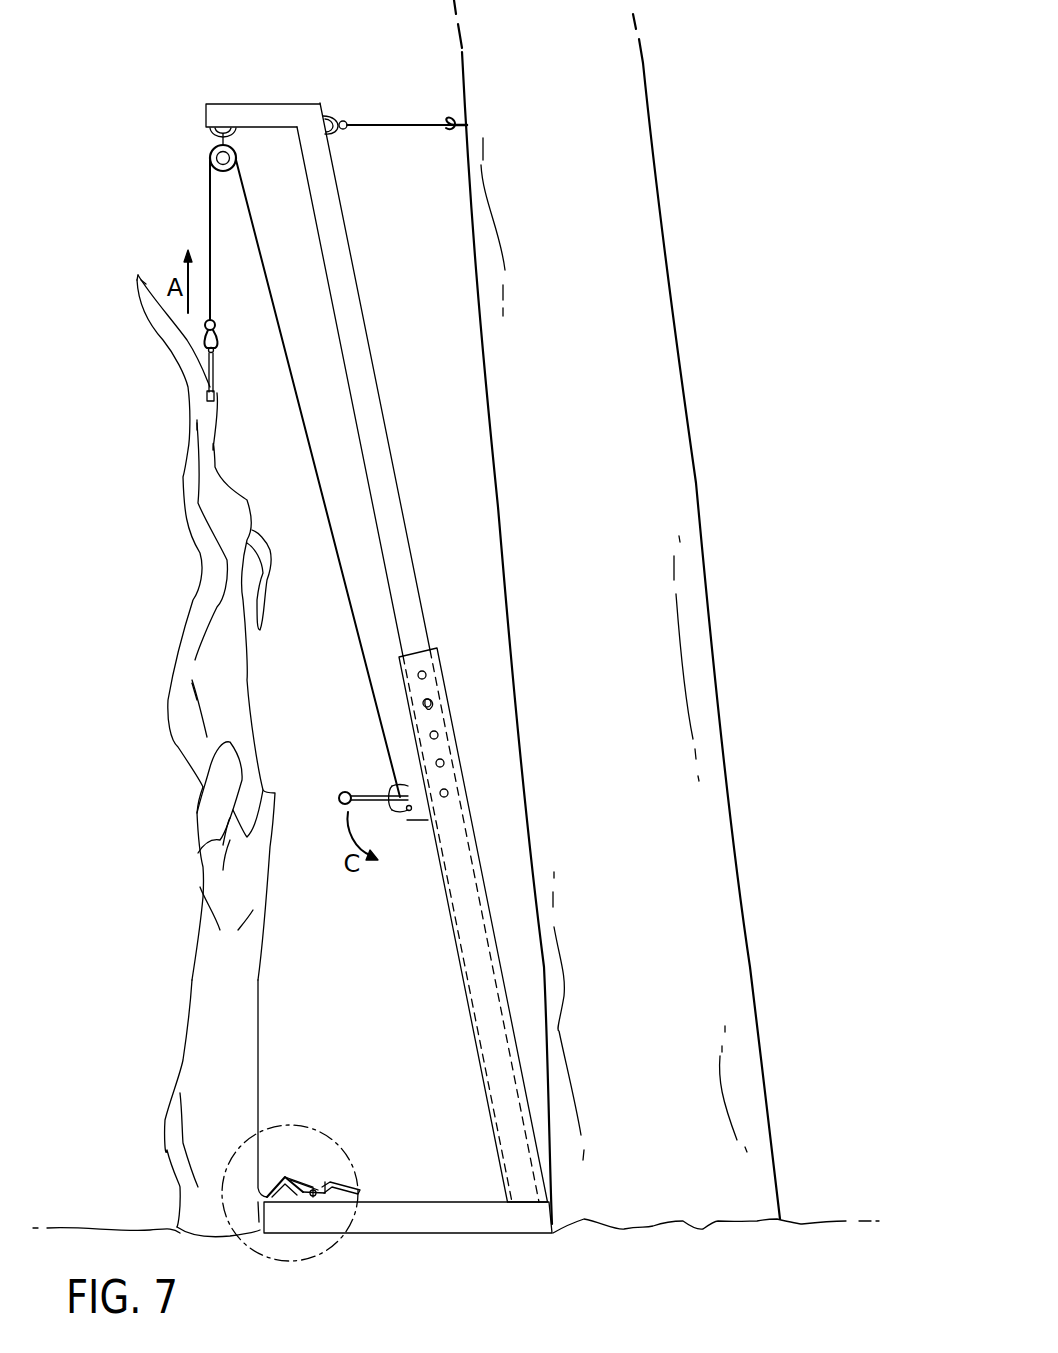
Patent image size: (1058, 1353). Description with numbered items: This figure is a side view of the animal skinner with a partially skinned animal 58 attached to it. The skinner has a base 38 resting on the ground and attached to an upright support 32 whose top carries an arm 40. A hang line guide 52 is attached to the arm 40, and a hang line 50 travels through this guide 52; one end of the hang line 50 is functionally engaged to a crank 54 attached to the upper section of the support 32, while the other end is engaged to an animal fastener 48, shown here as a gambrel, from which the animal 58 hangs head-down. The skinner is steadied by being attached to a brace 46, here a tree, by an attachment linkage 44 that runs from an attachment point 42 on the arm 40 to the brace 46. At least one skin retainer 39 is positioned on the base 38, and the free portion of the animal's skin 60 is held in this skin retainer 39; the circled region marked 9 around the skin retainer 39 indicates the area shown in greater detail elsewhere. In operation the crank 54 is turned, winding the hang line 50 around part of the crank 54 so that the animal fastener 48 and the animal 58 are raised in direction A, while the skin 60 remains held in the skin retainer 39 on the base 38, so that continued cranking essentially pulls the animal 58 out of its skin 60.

The support 32 is at (428, 618).
The base 38 is at (417, 1210).
The skin retainer 39 is at (311, 1183).
The arm 40 is at (225, 103).
The attachment point 42 is at (333, 118).
The attachment linkage 44 is at (390, 125).
The brace 46 is at (643, 311).
The animal fastener 48 is at (213, 368).
The hang line 50 is at (315, 477).
The hang line guide 52 is at (210, 156).
The crank 54 is at (408, 823).
The animal 58 is at (187, 713).
The animal's skin 60 is at (215, 983).
The section line 9 is at (268, 1128).